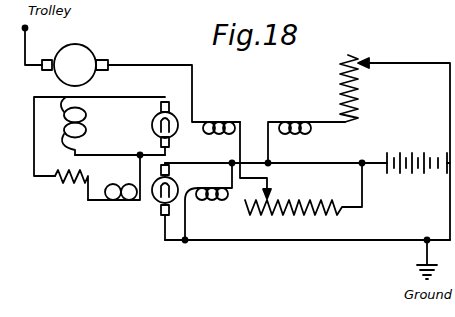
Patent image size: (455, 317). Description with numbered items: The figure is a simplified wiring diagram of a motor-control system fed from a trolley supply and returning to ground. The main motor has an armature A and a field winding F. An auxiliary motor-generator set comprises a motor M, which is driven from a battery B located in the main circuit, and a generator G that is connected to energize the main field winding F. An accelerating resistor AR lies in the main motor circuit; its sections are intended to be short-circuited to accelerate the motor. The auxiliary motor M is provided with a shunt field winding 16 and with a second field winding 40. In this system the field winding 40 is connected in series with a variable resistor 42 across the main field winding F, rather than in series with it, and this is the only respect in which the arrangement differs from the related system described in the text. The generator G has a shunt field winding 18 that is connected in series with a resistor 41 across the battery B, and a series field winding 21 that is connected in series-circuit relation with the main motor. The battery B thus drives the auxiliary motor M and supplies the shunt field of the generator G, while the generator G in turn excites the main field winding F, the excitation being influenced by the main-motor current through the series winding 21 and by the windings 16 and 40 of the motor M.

The shunt field winding 16 is at (208, 201).
The shunt field winding 18 is at (306, 129).
The series field winding 21 is at (221, 115).
The field winding 40 is at (114, 194).
The resistor 41 is at (362, 93).
The variable resistor 42 is at (65, 194).
The armature A is at (75, 65).
The accelerating resistor AR is at (303, 189).
The battery B is at (418, 180).
The field winding F is at (80, 126).
The generator G is at (171, 128).
The motor M is at (175, 201).